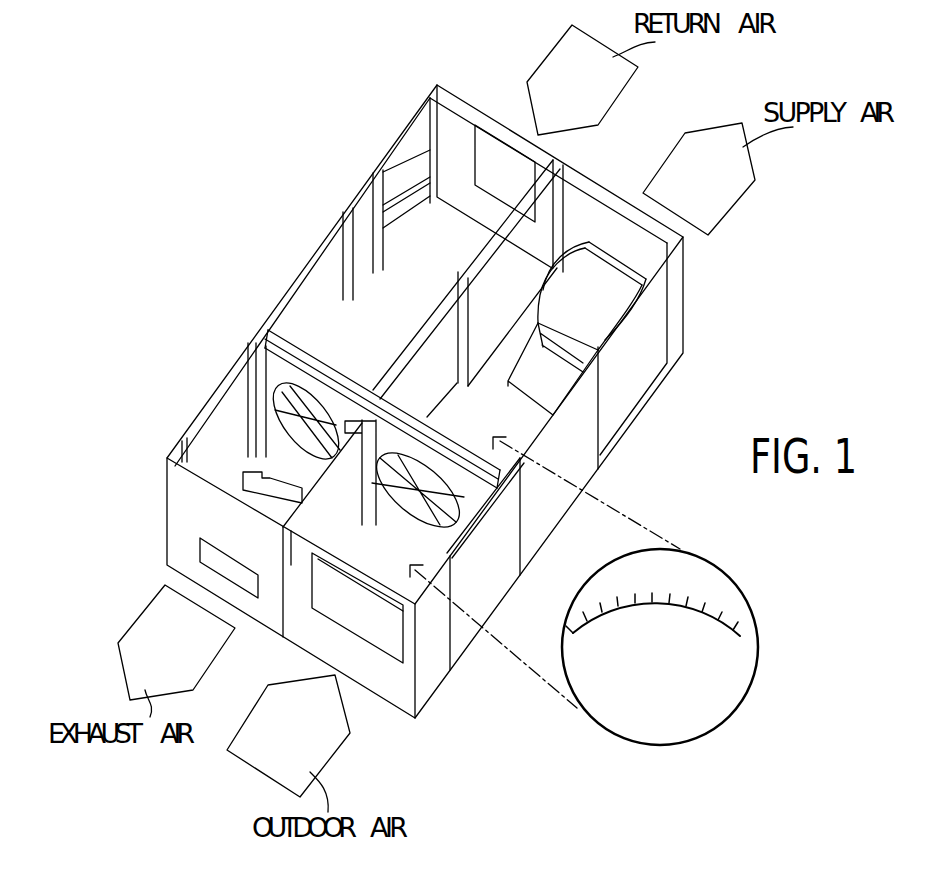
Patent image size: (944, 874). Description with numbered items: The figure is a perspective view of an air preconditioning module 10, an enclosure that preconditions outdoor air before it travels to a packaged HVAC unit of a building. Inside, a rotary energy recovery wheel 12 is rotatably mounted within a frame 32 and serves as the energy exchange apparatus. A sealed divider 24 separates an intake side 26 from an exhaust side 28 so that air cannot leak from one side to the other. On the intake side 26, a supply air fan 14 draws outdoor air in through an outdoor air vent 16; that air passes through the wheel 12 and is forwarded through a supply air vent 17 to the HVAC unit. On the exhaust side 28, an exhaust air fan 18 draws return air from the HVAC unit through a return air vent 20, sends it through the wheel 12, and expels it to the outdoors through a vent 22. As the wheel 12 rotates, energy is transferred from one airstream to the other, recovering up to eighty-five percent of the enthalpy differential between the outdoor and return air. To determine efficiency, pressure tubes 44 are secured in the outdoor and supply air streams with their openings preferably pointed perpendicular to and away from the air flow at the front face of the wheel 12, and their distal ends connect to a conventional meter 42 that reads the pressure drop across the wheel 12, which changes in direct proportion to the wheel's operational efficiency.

The air preconditioning module 10 is at (308, 61).
The rotary energy recovery wheel 12 is at (266, 332).
The supply air fan 14 is at (628, 307).
The outdoor air vent 16 is at (400, 638).
The supply air vent 17 is at (620, 265).
The exhaust air fan 18 is at (237, 458).
The return air vent 20 is at (508, 137).
The vent 22 is at (202, 550).
The divider 24 is at (257, 322).
The intake side 26 is at (566, 418).
The exhaust side 28 is at (298, 263).
The frame 32 is at (497, 488).
The meter 42 is at (758, 655).
The pressure tubes 44 is at (598, 498).